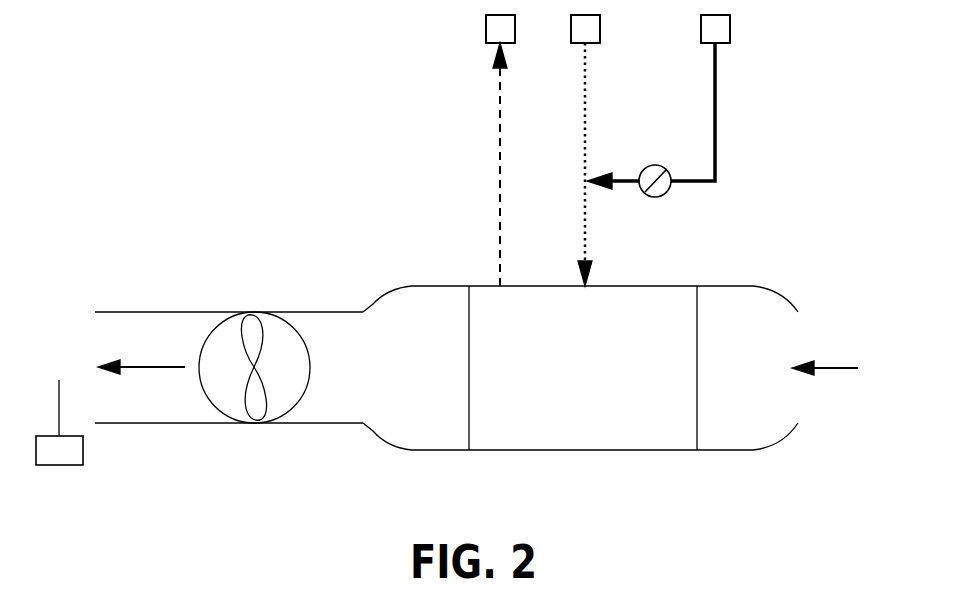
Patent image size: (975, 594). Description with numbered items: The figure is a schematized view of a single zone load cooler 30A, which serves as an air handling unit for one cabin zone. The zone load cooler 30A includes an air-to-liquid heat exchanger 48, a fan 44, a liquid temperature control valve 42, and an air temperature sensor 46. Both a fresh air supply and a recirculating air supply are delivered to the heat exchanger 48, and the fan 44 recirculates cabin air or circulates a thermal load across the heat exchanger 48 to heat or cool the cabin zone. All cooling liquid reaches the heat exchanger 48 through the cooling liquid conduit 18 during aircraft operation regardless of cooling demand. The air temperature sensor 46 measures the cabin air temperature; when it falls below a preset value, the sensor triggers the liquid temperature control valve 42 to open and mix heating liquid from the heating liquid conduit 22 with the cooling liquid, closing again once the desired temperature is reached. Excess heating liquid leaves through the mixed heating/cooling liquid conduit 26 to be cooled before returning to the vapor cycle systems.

The zone load cooler 30A is at (479, 259).
The cooling liquid conduit 18 is at (585, 163).
The heating liquid conduit 22 is at (713, 125).
The mixed heating/cooling liquid conduit 26 is at (500, 163).
The liquid temperature control valve 42 is at (656, 197).
The fan 44 is at (205, 342).
The air temperature sensor 46 is at (52, 466).
The heat exchanger 48 is at (583, 368).